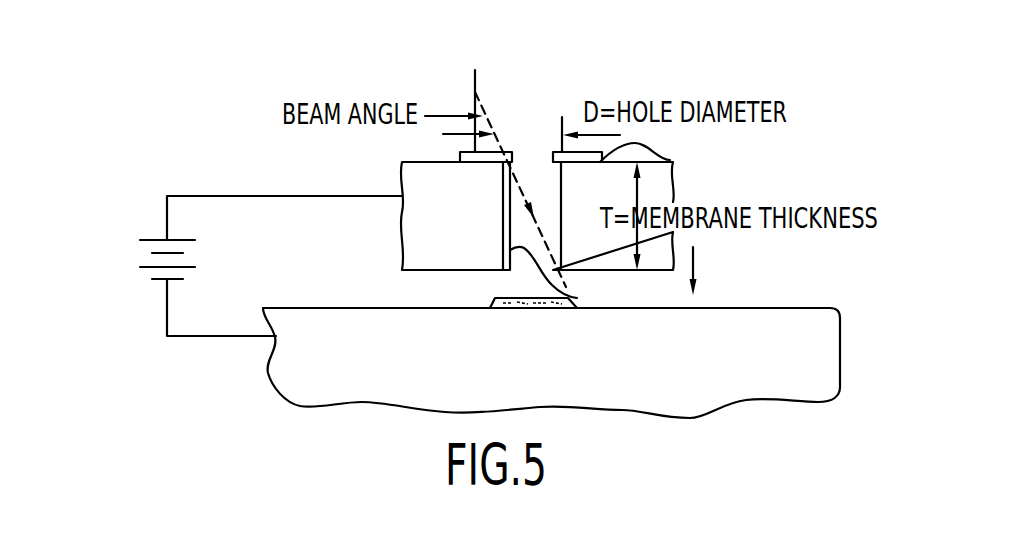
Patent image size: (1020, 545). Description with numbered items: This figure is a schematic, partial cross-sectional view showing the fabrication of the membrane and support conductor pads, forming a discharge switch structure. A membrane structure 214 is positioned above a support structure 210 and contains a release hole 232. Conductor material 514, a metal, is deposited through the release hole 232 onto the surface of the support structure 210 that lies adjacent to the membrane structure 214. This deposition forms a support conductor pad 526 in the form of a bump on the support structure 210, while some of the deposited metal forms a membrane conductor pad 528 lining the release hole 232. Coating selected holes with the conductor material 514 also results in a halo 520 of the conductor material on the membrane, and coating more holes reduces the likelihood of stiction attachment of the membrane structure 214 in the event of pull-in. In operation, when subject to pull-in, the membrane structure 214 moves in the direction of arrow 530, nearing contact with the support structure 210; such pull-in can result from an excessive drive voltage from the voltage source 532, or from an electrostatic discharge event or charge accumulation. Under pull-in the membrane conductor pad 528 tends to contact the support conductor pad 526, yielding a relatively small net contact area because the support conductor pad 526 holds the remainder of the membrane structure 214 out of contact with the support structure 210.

The support structure 210 is at (517, 380).
The membrane structure 214 is at (473, 229).
The release hole 232 is at (538, 140).
The conductor material 514 is at (503, 150).
The halo 520 is at (670, 160).
The support conductor pad 526 is at (563, 310).
The membrane conductor pad 528 is at (572, 296).
The arrow 530 is at (693, 262).
The voltage source 532 is at (147, 259).